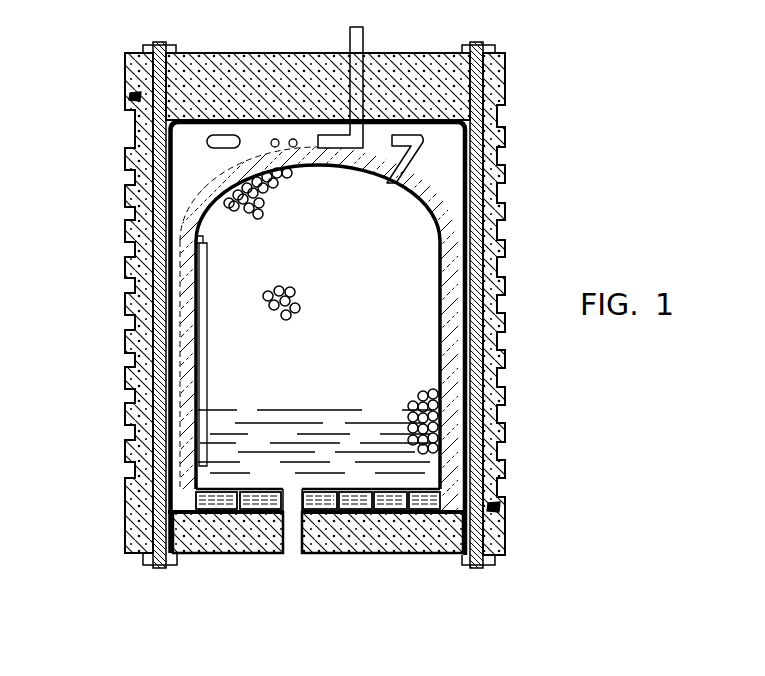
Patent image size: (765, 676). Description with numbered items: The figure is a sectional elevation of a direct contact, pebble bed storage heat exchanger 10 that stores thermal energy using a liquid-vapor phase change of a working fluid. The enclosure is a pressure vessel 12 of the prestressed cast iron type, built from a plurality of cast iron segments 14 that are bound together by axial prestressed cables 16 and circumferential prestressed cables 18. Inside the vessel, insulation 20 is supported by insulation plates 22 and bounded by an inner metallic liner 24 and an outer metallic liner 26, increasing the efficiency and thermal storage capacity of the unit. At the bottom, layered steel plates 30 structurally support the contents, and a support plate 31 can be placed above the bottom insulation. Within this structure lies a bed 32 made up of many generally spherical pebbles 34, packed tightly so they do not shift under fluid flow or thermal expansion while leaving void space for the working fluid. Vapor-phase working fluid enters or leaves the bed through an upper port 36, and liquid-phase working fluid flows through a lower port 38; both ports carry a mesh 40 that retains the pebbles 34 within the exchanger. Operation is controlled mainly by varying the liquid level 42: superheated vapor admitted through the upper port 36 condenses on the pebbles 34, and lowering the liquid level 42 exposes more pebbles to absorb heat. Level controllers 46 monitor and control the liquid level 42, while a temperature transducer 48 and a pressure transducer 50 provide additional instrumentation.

The storage heat exchanger 10 is at (53, 332).
The pressure vessel 12 is at (503, 84).
The cast iron segments 14 is at (505, 381).
The axial prestressed cables 16 is at (162, 43).
The circumferential prestressed cables 18 is at (131, 98).
The insulation 20 is at (233, 176).
The insulation plates 22 is at (452, 268).
The inner metallic liner 24 is at (438, 355).
The outer metallic liner 26 is at (457, 293).
The layered steel plates 30 is at (420, 497).
The support plate 31 is at (358, 490).
The bed 32 is at (338, 308).
The pebbles 34 is at (270, 190).
The upper port 36 is at (422, 147).
The lower port 38 is at (289, 490).
The mesh 40 is at (390, 175).
The liquid level 42 is at (298, 408).
The level controllers 46 is at (203, 237).
The temperature transducer 48 is at (275, 139).
The pressure transducer 50 is at (293, 139).